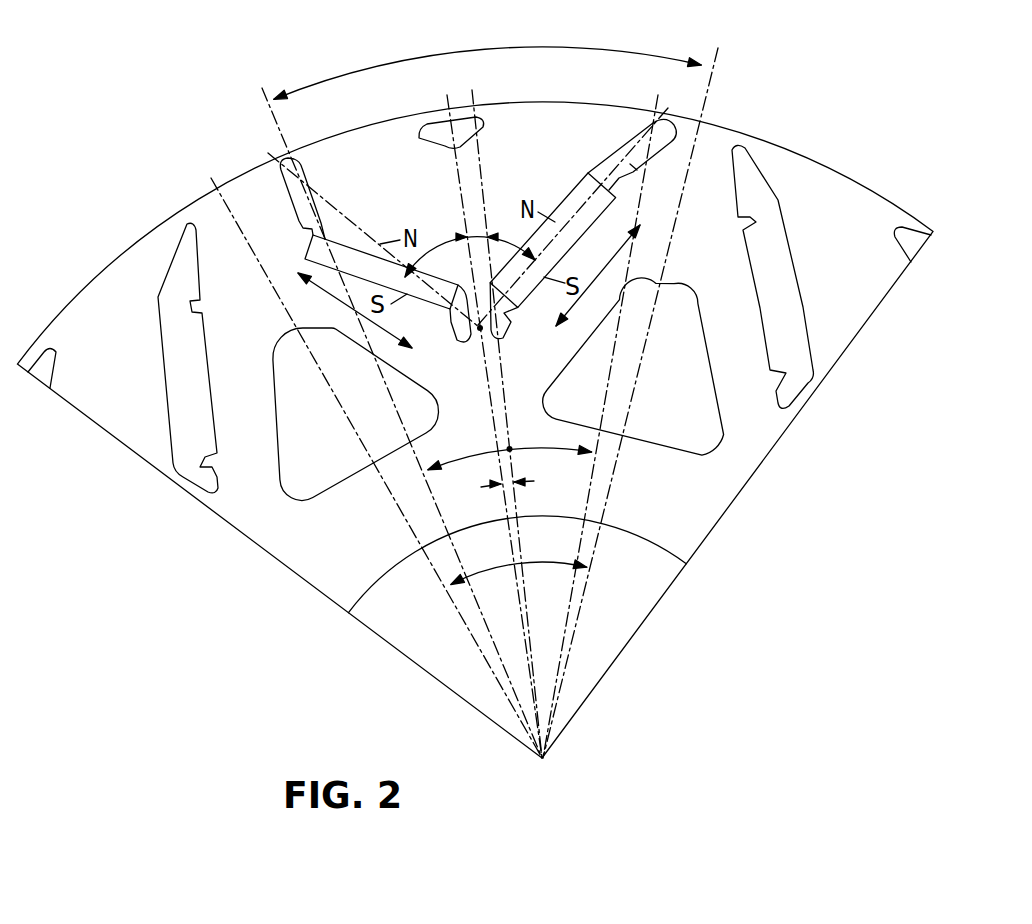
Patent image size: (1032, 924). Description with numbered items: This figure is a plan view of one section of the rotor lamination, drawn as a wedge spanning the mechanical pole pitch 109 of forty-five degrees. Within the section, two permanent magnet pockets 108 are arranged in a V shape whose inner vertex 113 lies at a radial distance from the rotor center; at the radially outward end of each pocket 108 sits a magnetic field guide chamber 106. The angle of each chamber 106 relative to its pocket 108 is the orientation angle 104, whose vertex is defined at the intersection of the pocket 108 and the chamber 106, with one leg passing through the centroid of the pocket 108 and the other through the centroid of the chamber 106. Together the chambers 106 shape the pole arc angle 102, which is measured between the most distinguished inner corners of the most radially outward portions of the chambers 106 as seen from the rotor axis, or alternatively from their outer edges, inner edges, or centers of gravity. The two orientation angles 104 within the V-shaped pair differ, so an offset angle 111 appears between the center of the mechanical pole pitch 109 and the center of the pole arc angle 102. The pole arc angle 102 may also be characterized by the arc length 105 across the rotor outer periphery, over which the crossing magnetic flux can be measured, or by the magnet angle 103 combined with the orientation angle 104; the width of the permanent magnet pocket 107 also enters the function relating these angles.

The pole arc angle 102 is at (566, 448).
The magnet angle 103 is at (496, 236).
The orientation angle 104 is at (309, 190).
The arc length 105 is at (407, 59).
The magnetic field guide chamber 106 is at (284, 207).
The width of the permanent magnet pocket 107 is at (378, 320).
The magnet pocket 108 is at (345, 226).
The mechanical pole pitch 109 is at (547, 566).
The offset angle 111 is at (534, 481).
The inner vertex of the V-shaped magnet pocket 113 is at (479, 331).